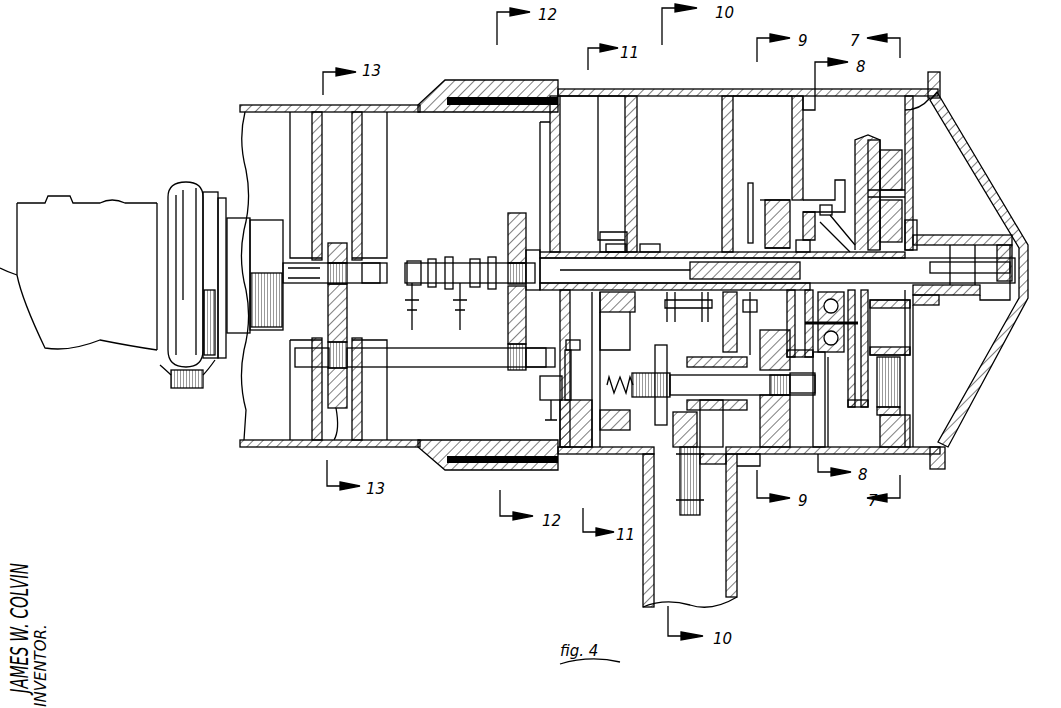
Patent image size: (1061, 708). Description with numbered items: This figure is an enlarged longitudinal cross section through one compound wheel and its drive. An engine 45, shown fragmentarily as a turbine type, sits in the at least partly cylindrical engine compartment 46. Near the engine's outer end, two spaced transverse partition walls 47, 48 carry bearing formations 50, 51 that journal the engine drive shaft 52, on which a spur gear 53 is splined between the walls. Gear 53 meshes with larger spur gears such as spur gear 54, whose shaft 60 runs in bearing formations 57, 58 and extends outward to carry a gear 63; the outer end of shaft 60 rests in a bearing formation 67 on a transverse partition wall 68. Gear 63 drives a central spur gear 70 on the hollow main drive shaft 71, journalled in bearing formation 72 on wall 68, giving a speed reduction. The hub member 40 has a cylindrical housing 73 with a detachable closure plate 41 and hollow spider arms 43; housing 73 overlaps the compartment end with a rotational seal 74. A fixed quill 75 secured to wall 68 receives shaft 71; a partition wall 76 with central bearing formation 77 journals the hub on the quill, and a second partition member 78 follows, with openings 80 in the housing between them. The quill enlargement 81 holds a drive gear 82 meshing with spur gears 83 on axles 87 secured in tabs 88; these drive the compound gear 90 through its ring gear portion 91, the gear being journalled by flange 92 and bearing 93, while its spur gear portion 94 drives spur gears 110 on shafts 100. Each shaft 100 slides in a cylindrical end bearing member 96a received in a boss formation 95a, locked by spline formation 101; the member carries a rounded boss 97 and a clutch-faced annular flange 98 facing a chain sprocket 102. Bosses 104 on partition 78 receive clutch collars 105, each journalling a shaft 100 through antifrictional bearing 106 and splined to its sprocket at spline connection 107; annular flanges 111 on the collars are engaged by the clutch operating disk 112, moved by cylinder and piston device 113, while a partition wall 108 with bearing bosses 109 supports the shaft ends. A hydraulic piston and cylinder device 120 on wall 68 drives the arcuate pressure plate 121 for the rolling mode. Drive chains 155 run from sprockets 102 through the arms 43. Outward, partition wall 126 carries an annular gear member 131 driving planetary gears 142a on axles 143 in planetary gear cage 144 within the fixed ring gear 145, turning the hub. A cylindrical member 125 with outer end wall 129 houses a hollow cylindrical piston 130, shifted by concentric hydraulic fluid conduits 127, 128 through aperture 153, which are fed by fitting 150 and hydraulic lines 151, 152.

The central hub member 40 is at (752, 90).
The closure plate 41 is at (975, 143).
The spider arm 43 is at (643, 550).
The engine 45 is at (120, 198).
The engine compartment 46 is at (262, 108).
The partition wall 47 is at (302, 180).
The partition wall 48 is at (364, 170).
The bearing formation 50 is at (300, 240).
The bearing formation 51 is at (378, 262).
The engine drive shaft 52 is at (388, 272).
The spur gear 53 is at (342, 243).
The spur gear 54 is at (338, 440).
The bearing formation 57 is at (300, 370).
The bearing formation 58 is at (372, 370).
The shaft 60 is at (462, 367).
The gear 63 is at (508, 372).
The bearing formation 67 is at (546, 322).
The partition wall 68 is at (556, 146).
The central spur gear 70 is at (508, 222).
The main drive shaft 71 is at (684, 250).
The bearing formation 72 is at (544, 256).
The cylindrical housing 73 is at (682, 90).
The rotational seal 74 is at (514, 80).
The fixed quill 75 is at (665, 252).
The transverse partition wall 76 is at (638, 152).
The central bearing formation 77 is at (608, 236).
The partition member 78 is at (724, 150).
The opening 80 is at (728, 462).
The annular enlargement 81 is at (818, 222).
The drive gear 82 is at (846, 242).
The spur gear 83 is at (818, 386).
The axle 87 is at (806, 332).
The tab 88 is at (816, 364).
The compound gear 90 is at (790, 200).
The ring gear portion 91 is at (830, 180).
The internal annular flange 92 is at (774, 200).
The bearing 93 is at (802, 246).
The spur gear portion 94 is at (782, 200).
The boss formation 95a is at (592, 447).
The cylindrical end bearing member 96a is at (634, 368).
The rounded boss 97 is at (586, 392).
The annular flange 98 is at (634, 334).
The shaft 100 is at (700, 385).
The spline formation 101 is at (642, 402).
The chain sprocket 102 is at (670, 345).
The boss 104 is at (716, 423).
The clutch collar 105 is at (717, 366).
The antifrictional bearing 106 is at (717, 400).
The spline connection 107 is at (688, 425).
The transverse partition wall 108 is at (798, 115).
The bearing boss 109 is at (812, 402).
The spur gear 110 is at (806, 474).
The annular flange 111 is at (776, 410).
The clutch operating disk 112 is at (748, 188).
The cylinder and piston device 113 is at (685, 325).
The hydraulic piston and cylinder device 120 is at (540, 388).
The pressure plate 121 is at (580, 345).
The cylindrical member 125 is at (950, 238).
The transverse partition wall 126 is at (938, 100).
The hydraulic fluid conduit 127 is at (716, 283).
The hydraulic fluid conduit 128 is at (714, 258).
The outer end wall 129 is at (1000, 295).
The hollow cylindrical piston 130 is at (938, 305).
The annular gear member 131 is at (920, 232).
The planetary gear 142a is at (900, 172).
The axle 143 is at (906, 190).
The planetary gear cage 144 is at (900, 346).
The ring gear 145 is at (860, 138).
The fitting 150 is at (466, 262).
The hydraulic line 151 is at (462, 330).
The hydraulic line 152 is at (412, 320).
The aperture 153 is at (957, 262).
The drive chain 155 is at (688, 505).